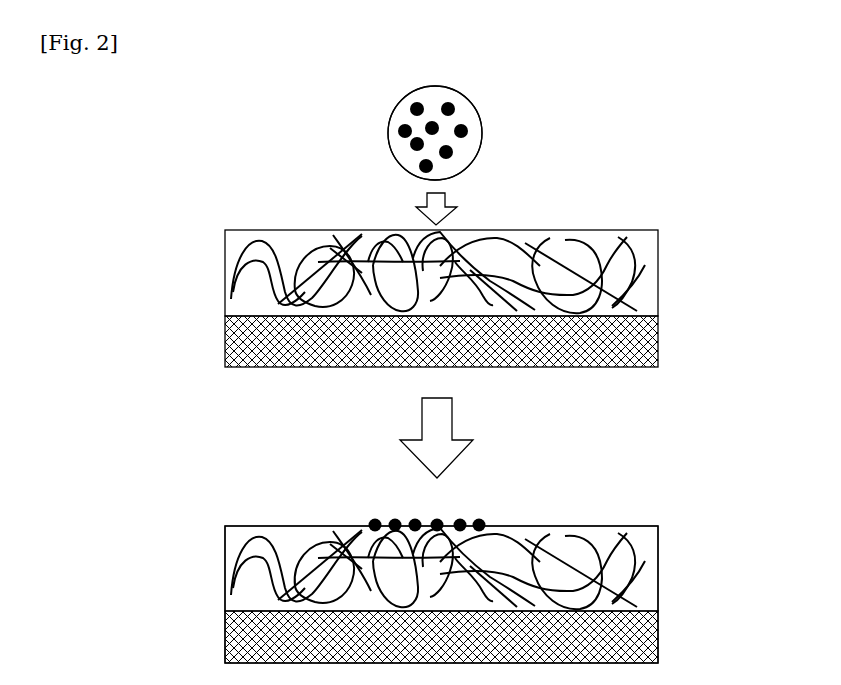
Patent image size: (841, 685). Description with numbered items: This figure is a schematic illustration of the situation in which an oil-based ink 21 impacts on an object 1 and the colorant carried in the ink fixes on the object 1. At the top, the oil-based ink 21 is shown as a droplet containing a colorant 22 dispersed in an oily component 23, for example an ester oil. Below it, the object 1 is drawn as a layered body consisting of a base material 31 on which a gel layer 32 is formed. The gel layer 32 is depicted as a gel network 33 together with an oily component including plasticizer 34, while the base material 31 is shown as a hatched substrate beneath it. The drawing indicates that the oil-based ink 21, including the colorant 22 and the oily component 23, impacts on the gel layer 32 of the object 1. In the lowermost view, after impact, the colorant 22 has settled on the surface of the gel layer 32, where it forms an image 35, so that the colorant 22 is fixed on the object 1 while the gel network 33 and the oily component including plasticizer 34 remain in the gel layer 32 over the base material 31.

The object 1 is at (143, 526).
The oil-based ink 21 is at (380, 87).
The colorant 22 is at (452, 107).
The oily component 23 is at (482, 133).
The base material 31 is at (213, 316).
The gel layer 32 is at (213, 230).
The gel network 33 is at (636, 246).
The oily component including plasticizer 34 is at (647, 287).
The image 35 is at (462, 510).